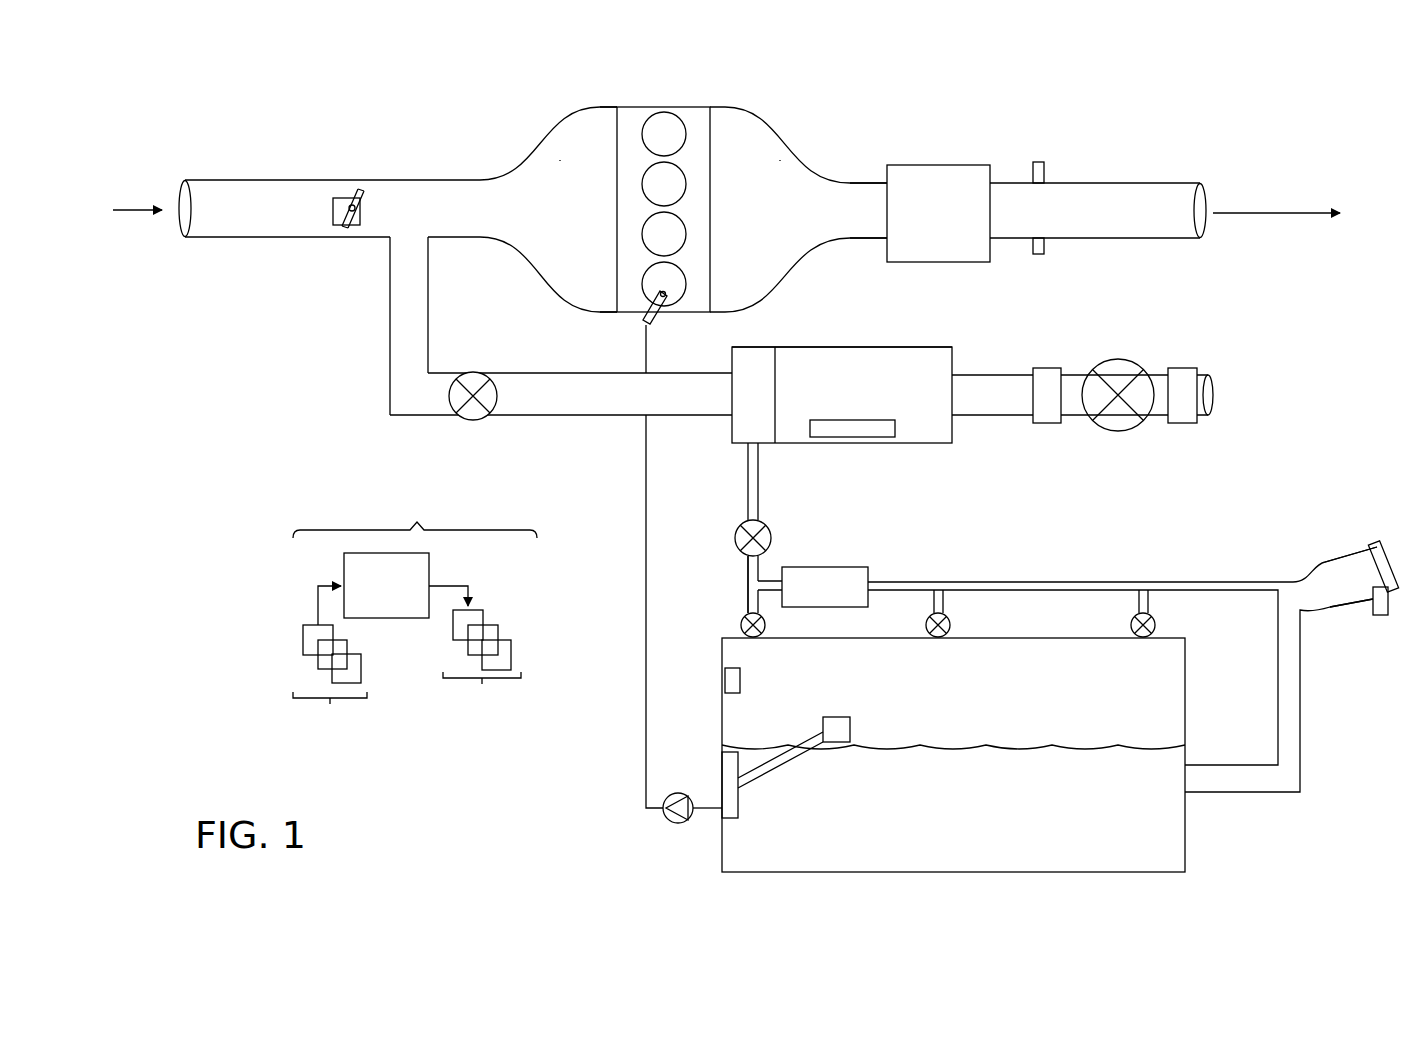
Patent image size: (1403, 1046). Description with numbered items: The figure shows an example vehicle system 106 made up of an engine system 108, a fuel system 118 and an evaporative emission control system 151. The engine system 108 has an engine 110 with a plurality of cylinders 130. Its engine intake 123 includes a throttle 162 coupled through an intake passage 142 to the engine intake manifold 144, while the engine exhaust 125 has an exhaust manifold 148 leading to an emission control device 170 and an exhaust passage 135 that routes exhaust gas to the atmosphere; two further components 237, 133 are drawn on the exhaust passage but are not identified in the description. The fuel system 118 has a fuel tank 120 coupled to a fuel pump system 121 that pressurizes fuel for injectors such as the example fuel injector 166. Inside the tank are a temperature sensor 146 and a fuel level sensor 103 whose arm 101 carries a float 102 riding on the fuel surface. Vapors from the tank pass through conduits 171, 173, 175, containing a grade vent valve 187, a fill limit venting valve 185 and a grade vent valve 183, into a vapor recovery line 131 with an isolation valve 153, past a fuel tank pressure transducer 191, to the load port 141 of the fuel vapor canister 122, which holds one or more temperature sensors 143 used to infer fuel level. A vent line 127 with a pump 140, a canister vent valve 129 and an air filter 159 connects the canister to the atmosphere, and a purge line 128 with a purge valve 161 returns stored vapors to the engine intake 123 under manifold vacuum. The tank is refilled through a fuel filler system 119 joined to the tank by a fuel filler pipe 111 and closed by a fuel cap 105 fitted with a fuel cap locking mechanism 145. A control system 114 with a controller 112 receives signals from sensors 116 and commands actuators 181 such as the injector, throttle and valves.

The arm 101 is at (770, 772).
The float 102 is at (842, 716).
The fuel level sensor 103 is at (735, 818).
The fuel cap 105 is at (1382, 543).
The vehicle system 106 is at (203, 112).
The engine system 108 is at (1000, 106).
The engine 110 is at (710, 192).
The fuel filler pipe 111 is at (1300, 690).
The controller 112 is at (386, 585).
The control system 114 is at (415, 510).
The sensors 116 is at (330, 664).
The fuel system 118 is at (1232, 834).
The fuel filler system 119 is at (1350, 546).
The fuel tank 120 is at (1183, 747).
The fuel pump system 121 is at (677, 793).
The fuel vapor canister 122 is at (952, 367).
The engine intake 123 is at (545, 135).
The engine exhaust 125 is at (878, 118).
The vent line 127 is at (1060, 395).
The purge line 128 is at (561, 394).
The canister vent valve 129 is at (1118, 358).
The cylinders 130 is at (686, 126).
The vapor recovery line 131 is at (758, 470).
The exhaust sensor 133 is at (1034, 250).
The exhaust passage 135 is at (1148, 183).
The pump 140 is at (1048, 368).
The load port 141 is at (770, 347).
The intake passage 142 is at (390, 240).
The temperature sensor 143 is at (835, 437).
The engine intake manifold 144 is at (565, 191).
The fuel cap locking mechanism 145 is at (1380, 615).
The temperature sensor 146 is at (724, 680).
The exhaust manifold 148 is at (780, 191).
The evaporative emission control system 151 is at (1222, 328).
The isolation valve 153 is at (771, 537).
The air filter 159 is at (1188, 368).
The purge valve 161 is at (472, 372).
The throttle 162 is at (358, 221).
The fuel injector 166 is at (651, 322).
The emission control device 170 is at (924, 165).
The conduit 171 is at (760, 598).
The conduit 173 is at (932, 600).
The conduit 175 is at (1137, 602).
The actuators 181 is at (1202, 582).
The grade vent valve 183 is at (1156, 626).
The fill limit venting valve 185 is at (950, 625).
The grade vent valve 187 is at (741, 622).
The fuel tank pressure transducer 191 is at (820, 567).
The exhaust sensor 237 is at (1034, 172).